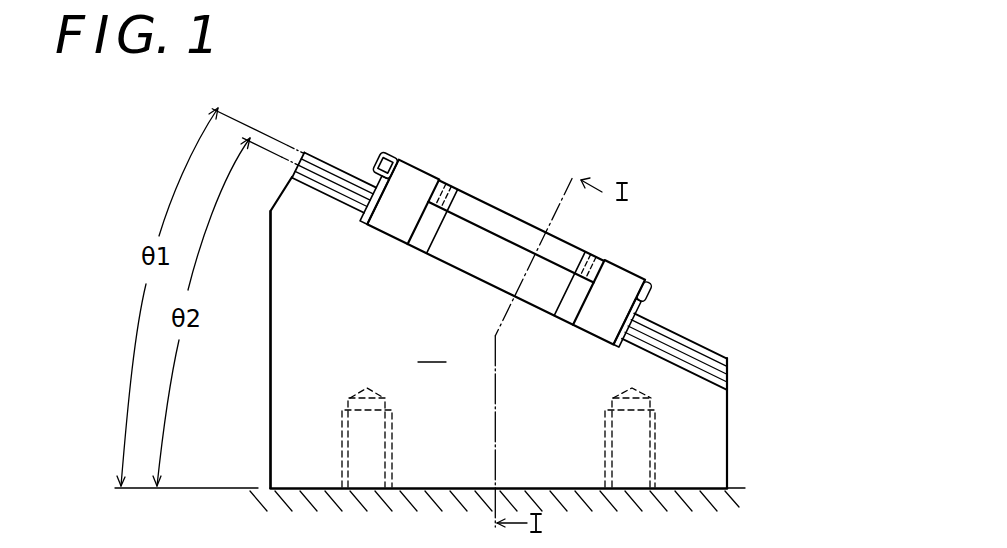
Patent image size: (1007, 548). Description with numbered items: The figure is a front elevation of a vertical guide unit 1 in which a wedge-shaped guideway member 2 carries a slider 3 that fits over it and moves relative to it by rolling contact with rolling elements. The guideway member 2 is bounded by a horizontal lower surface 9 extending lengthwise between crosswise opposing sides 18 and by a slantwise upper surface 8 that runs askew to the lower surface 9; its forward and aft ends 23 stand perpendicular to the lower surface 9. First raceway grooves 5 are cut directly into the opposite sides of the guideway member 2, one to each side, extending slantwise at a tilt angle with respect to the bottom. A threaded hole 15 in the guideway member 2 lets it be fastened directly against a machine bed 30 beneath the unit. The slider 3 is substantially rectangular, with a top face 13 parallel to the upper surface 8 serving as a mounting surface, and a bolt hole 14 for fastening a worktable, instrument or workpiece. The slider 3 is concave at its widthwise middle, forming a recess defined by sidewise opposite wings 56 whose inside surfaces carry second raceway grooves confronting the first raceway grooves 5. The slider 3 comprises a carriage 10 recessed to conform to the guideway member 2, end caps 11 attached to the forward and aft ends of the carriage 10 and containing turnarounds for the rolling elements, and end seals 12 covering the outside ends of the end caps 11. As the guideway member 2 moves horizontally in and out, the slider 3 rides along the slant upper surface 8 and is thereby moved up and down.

The vertical guide unit 1 is at (389, 150).
The guideway member 2 is at (333, 358).
The slider 3 is at (522, 222).
The first raceway groove 5 is at (677, 353).
The slantwise upper surface 8 is at (334, 166).
The horizontal lower surface 9 is at (693, 500).
The carriage 10 is at (532, 218).
The end cap 11 is at (414, 182).
The end seal 12 is at (375, 196).
The top face 13 is at (497, 216).
The bolt hole 14 is at (455, 180).
The threaded hole 15 is at (365, 458).
The crosswise opposing sides 18 is at (431, 348).
The forward and aft ends 23 is at (269, 360).
The machine bed 30 is at (578, 501).
The wings 56 is at (467, 258).